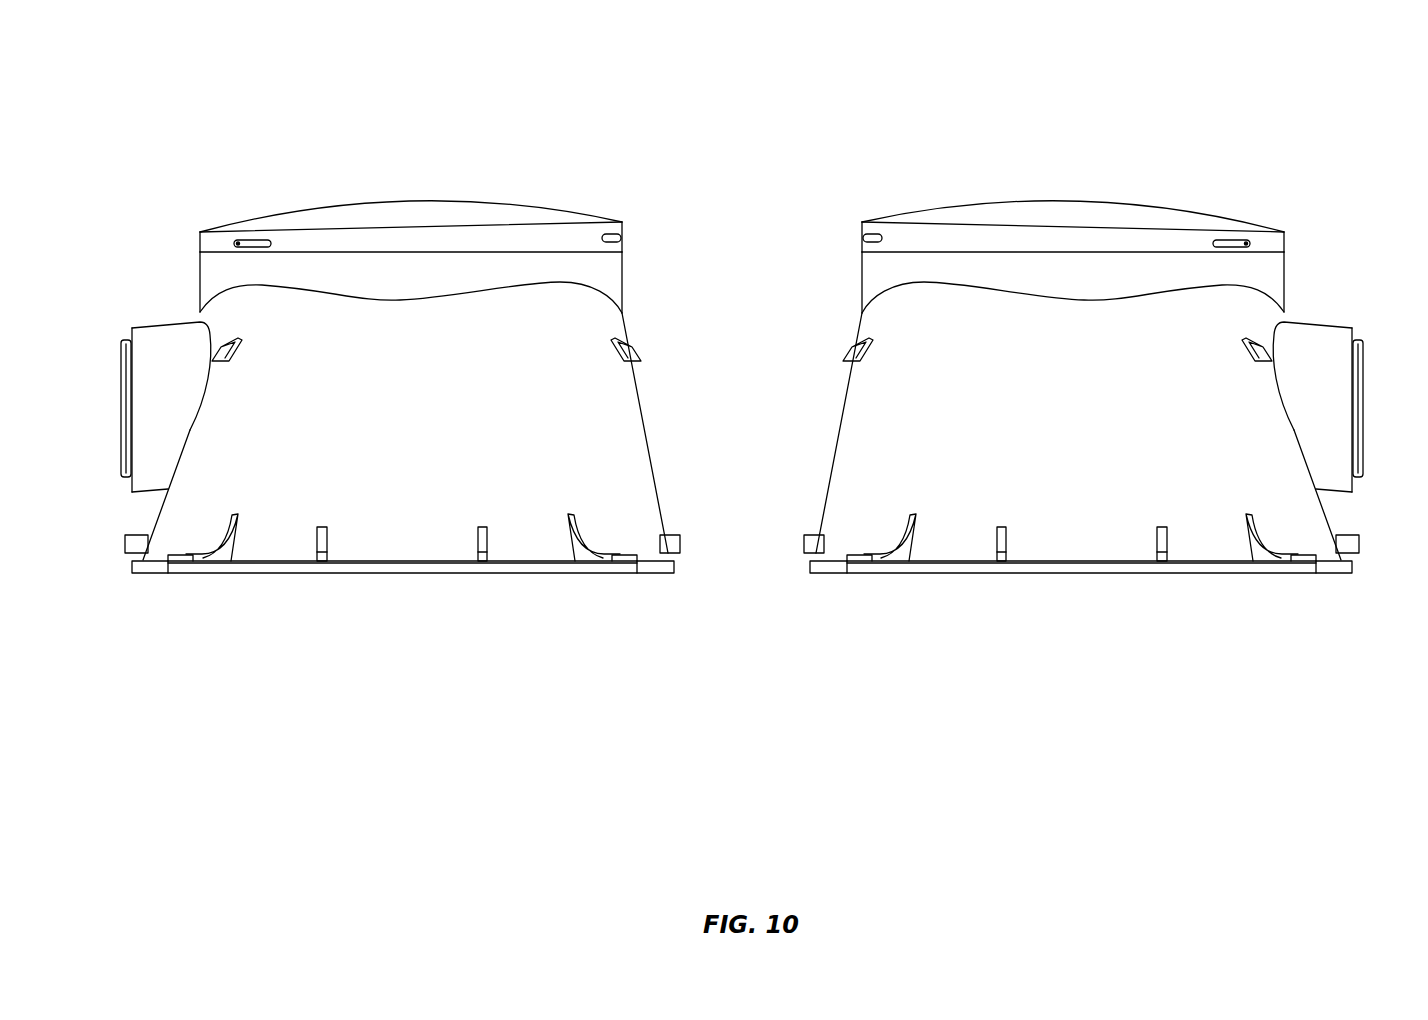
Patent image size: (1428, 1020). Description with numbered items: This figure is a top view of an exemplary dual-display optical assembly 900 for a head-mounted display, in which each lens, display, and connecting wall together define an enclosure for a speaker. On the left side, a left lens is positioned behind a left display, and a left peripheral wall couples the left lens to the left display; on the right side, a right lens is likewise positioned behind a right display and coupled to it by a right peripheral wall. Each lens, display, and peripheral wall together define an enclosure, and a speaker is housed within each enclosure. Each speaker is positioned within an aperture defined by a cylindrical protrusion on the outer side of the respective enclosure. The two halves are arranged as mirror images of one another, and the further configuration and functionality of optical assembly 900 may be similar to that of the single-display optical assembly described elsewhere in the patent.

The dual-display optical assembly 900 is at (223, 53).